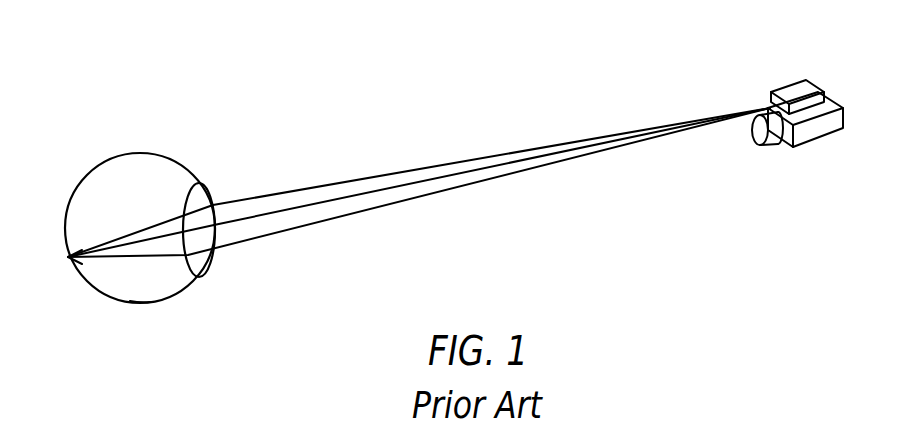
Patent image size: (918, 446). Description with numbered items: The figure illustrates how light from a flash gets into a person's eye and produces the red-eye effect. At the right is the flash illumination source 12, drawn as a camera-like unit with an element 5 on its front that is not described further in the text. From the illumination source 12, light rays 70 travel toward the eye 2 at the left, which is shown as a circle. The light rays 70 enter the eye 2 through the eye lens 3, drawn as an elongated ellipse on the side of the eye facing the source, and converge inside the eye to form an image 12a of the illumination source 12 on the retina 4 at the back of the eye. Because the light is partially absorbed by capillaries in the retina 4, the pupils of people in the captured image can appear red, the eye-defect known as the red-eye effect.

The eye 2 is at (167, 285).
The eye lens 3 is at (202, 188).
The retina 4 is at (95, 168).
The camera lens 5 is at (763, 147).
The flash illumination source 12 is at (795, 83).
The image of the illumination source 12a is at (68, 258).
The light rays 70 is at (450, 190).